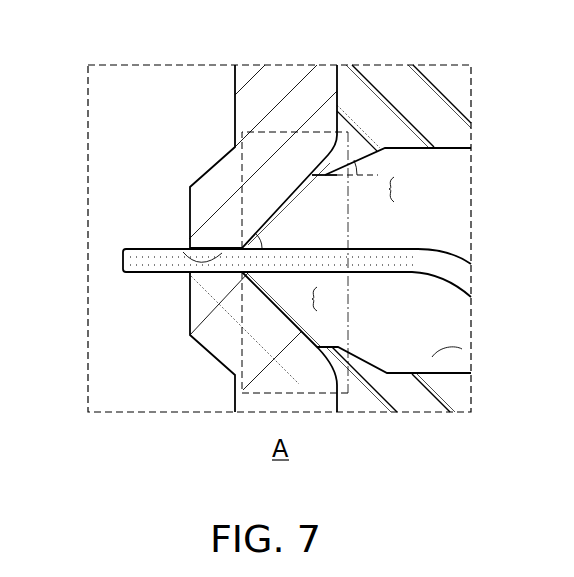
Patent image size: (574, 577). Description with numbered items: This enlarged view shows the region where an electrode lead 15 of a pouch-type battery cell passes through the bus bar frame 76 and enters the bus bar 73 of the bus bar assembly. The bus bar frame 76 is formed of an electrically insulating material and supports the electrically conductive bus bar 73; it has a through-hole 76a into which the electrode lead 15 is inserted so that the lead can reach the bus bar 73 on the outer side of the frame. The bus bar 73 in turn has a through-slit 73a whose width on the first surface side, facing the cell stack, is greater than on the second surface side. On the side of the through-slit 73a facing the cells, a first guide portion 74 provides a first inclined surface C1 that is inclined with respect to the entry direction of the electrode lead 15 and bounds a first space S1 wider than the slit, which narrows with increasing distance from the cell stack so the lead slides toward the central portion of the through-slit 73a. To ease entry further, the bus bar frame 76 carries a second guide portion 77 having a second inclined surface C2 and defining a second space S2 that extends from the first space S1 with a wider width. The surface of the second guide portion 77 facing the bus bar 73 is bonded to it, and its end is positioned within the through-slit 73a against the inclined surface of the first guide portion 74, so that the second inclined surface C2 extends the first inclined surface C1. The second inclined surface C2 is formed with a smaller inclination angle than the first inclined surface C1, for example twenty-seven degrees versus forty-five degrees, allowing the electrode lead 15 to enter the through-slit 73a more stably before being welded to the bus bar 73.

The bus bar 73 is at (262, 98).
The first guide portion 74 is at (293, 134).
The through-slit 73a is at (186, 257).
The electrode lead 15 is at (124, 262).
The first space S1 is at (312, 300).
The second space S2 is at (396, 190).
The first inclined surface C1 is at (287, 207).
The second guide portion 77 is at (358, 368).
The second inclined surface C2 is at (364, 378).
The through-hole 76a is at (462, 349).
The bus bar frame 76 is at (448, 402).